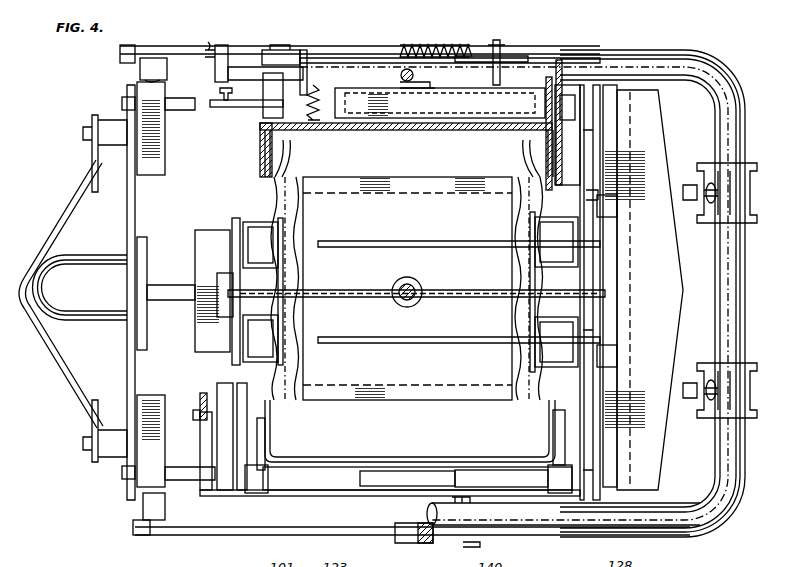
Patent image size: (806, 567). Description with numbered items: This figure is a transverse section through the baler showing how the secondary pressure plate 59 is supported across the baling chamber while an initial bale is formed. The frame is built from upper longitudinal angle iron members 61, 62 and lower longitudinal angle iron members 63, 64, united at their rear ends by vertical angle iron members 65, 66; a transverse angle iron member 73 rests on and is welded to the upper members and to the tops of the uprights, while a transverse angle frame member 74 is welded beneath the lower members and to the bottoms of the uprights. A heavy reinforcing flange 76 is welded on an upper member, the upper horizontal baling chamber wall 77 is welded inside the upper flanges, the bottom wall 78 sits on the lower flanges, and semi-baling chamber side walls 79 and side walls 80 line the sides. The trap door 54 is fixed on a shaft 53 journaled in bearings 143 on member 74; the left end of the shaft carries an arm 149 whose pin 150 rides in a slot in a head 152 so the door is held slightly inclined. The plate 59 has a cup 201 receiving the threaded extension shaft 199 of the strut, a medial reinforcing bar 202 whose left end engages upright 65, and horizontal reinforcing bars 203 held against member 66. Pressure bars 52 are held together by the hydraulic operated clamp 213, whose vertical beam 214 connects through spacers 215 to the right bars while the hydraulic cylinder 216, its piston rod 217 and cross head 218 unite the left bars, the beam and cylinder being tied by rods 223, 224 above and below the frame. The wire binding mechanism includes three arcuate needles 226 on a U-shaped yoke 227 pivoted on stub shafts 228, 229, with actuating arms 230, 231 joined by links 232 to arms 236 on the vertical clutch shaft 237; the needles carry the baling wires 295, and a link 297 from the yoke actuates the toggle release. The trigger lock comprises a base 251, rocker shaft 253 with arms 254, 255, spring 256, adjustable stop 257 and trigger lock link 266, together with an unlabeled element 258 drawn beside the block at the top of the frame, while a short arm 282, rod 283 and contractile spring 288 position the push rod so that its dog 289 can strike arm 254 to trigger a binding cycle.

The pressure bars 52 is at (262, 322).
The shaft 53 is at (487, 470).
The trap door 54 is at (380, 490).
The secondary pressure plate 59 is at (336, 400).
The longitudinal angle iron member 61 is at (260, 135).
The longitudinal angle iron member 62 is at (552, 132).
The longitudinal angle iron member 63 is at (258, 432).
The longitudinal angle iron member 64 is at (560, 434).
The vertical angle iron member 65 is at (222, 165).
The vertical angle iron member 66 is at (588, 155).
The transverse angle iron member 73 is at (570, 95).
The transverse angle frame member 74 is at (243, 497).
The reinforcing flange 76 is at (560, 62).
The upper horizontal baling chamber wall 77 is at (378, 132).
The bottom wall 78 is at (400, 465).
The semi-baling chamber side walls 79 is at (272, 158).
The semi-baling chamber side walls 80 is at (270, 428).
The bearings 143 is at (265, 492).
The arm 149 is at (207, 448).
The pin 150 is at (193, 418).
The head 152 is at (200, 400).
The extension shaft 199 is at (403, 300).
The cup 201 is at (414, 280).
The medial reinforcing bar 202 is at (345, 290).
The horizontal reinforcing bars 203 is at (380, 241).
The hydraulic operated clamp 213 is at (78, 453).
The vertical beam 214 is at (665, 144).
The spacers 215 is at (614, 208).
The hydraulic cylinder 216 is at (60, 340).
The piston rod 217 is at (172, 285).
The cross head 218 is at (205, 232).
The rod 223 is at (178, 106).
The rod 224 is at (182, 480).
The arcuate needles 226 is at (690, 200).
The U-shaped yoke 227 is at (728, 103).
The stub shaft 228 is at (446, 98).
The stub shaft 229 is at (460, 503).
The actuating arm 230 is at (546, 60).
The actuating arm 231 is at (545, 532).
The links 232 is at (355, 50).
The arms 236 is at (118, 58).
The vertical clutch shaft 237 is at (140, 78).
The base 251 is at (272, 95).
The trigger lock rocker shaft 253 is at (250, 67).
The arm 254 is at (305, 50).
The arm 255 is at (220, 46).
The spring 256 is at (320, 90).
The adjustable stop 257 is at (220, 90).
The block 258 is at (255, 112).
The trigger lock link 266 is at (205, 44).
The short arm 282 is at (502, 42).
The rod 283 is at (385, 58).
The contractile spring 288 is at (425, 45).
The dog 289 is at (296, 50).
The baling wires 295 is at (274, 220).
The link 297 is at (402, 76).